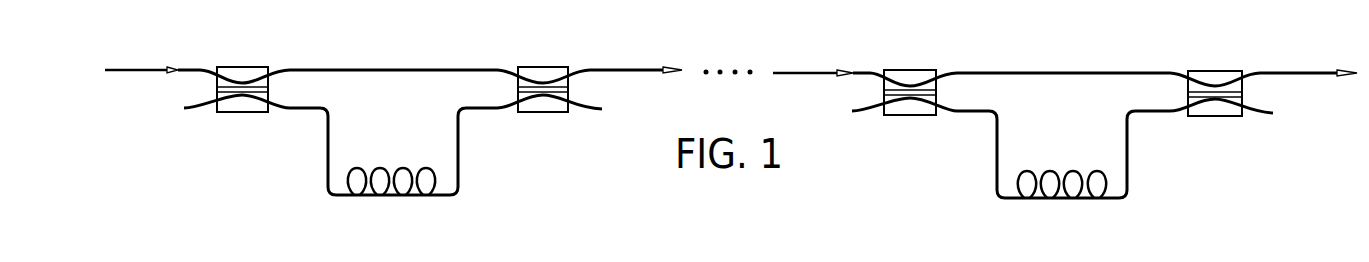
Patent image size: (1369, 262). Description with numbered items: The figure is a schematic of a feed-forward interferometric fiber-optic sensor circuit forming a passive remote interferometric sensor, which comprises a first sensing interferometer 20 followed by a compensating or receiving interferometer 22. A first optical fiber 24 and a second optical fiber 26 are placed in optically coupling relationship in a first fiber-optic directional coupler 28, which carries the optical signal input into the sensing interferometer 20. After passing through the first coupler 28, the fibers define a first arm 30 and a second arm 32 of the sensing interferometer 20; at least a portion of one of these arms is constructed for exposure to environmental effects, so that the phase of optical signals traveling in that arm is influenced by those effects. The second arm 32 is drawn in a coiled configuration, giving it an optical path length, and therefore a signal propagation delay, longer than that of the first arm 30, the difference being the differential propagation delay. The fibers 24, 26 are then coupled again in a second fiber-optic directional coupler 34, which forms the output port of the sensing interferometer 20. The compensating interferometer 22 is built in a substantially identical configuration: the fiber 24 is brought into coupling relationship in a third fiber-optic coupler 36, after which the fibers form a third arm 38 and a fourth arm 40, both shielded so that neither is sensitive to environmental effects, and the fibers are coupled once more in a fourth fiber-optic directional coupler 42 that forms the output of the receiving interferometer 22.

The first sensing interferometer 20 is at (309, 210).
The compensating interferometer 22 is at (977, 214).
The first optical fiber 24 is at (113, 68).
The second optical fiber 26 is at (200, 108).
The first fiber-optic directional coupler 28 is at (228, 67).
The first arm 30 is at (307, 68).
The second arm 32 is at (410, 197).
The second fiber-optic directional coupler 34 is at (525, 68).
The third fiber-optic coupler 36 is at (890, 70).
The third arm 38 is at (1042, 73).
The fourth arm 40 is at (1088, 200).
The fourth fiber-optic directional coupler 42 is at (1197, 72).